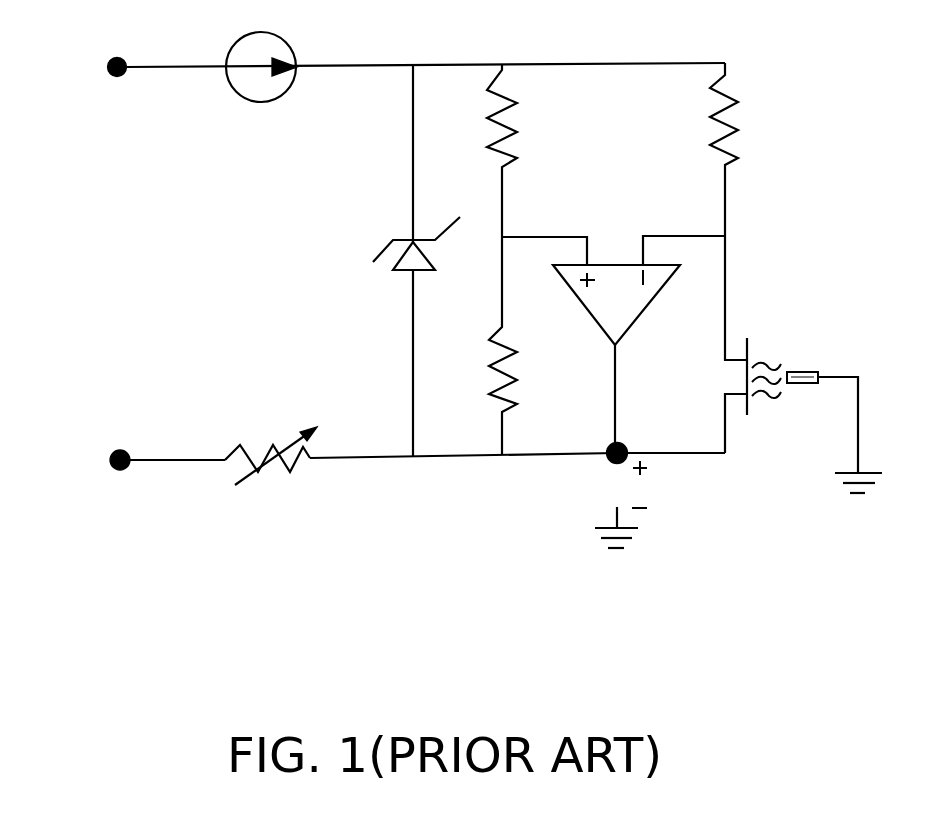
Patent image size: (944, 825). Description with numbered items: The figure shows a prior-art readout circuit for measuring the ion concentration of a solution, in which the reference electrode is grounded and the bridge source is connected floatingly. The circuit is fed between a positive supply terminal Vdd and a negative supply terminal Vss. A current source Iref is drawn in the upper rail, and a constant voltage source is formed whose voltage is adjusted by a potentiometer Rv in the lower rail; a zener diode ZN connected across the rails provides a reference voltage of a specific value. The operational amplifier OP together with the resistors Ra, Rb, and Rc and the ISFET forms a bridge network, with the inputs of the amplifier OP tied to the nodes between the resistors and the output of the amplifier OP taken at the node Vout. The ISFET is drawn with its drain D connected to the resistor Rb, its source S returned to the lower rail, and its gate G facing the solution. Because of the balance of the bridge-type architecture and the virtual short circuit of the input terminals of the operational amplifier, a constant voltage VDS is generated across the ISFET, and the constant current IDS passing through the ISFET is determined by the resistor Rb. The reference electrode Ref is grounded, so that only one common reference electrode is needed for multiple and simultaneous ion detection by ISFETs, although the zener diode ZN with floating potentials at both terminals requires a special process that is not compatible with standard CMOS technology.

The positive supply terminal Vdd is at (80, 68).
The negative supply terminal Vss is at (83, 462).
The current source Iref is at (261, 85).
The zener diode ZN is at (366, 256).
The resistor Ra is at (508, 133).
The resistor Rb is at (732, 131).
The resistor Rc is at (512, 366).
The operational amplifier OP is at (613, 344).
The output voltage Vout is at (600, 496).
The potentiometer Rv is at (271, 474).
The element ISFET is at (745, 369).
The drain D is at (709, 348).
The source S is at (707, 404).
The gate G is at (771, 348).
The reference electrode Ref is at (803, 370).